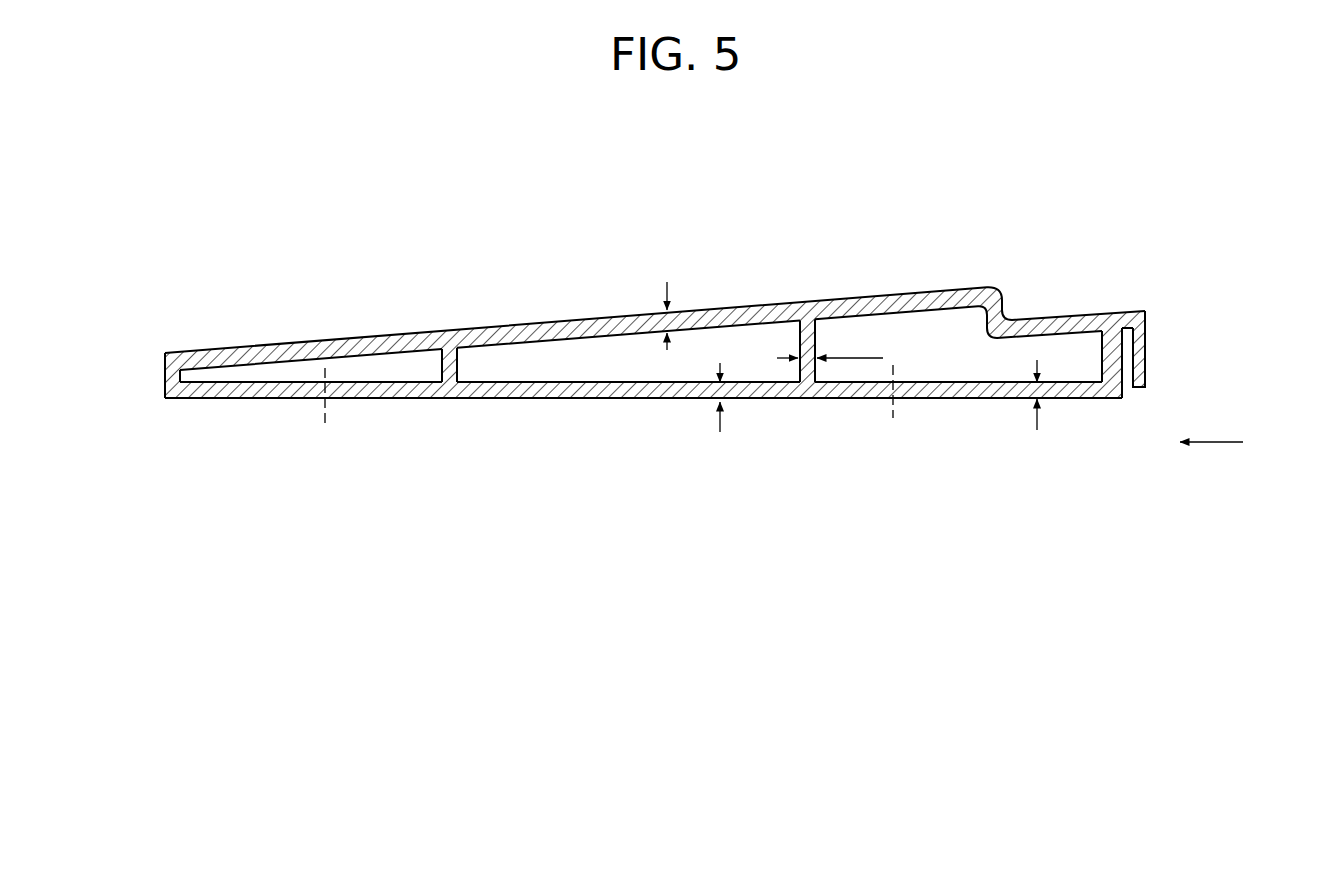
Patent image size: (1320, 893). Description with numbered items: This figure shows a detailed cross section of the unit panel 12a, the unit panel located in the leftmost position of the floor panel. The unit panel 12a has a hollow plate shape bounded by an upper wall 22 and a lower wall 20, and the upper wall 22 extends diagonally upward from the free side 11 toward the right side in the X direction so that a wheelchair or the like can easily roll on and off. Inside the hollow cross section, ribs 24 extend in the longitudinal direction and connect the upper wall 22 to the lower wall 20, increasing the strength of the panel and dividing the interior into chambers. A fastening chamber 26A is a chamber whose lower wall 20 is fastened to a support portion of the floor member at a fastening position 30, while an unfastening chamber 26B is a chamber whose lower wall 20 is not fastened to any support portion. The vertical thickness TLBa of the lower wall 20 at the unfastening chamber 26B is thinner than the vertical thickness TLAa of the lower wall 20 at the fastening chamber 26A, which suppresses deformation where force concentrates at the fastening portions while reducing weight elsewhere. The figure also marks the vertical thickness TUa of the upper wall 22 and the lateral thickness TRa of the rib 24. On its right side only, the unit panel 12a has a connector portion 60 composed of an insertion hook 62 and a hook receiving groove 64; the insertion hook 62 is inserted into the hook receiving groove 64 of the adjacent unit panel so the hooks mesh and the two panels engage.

The unit panel 12a is at (283, 302).
The upper wall 22 is at (590, 310).
The lower wall 20 is at (627, 402).
The free side 11 is at (165, 373).
The rib 24 is at (440, 347).
The fastening chamber 26A is at (402, 365).
The unfastening chamber 26B is at (570, 350).
The fastening position 30 is at (611, 411).
The connector portion 60 is at (1160, 342).
The insertion hook 62 is at (1145, 357).
The hook receiving groove 64 is at (1123, 373).
The vertical thickness of the upper wall TUa is at (692, 315).
The vertical thickness of the lower wall of the unfastening chamber TLBa is at (751, 402).
The lateral thickness of the rib TRa is at (830, 347).
The vertical thickness of the lower wall of the fastening chamber TLAa is at (1071, 400).
The X direction X is at (1224, 444).